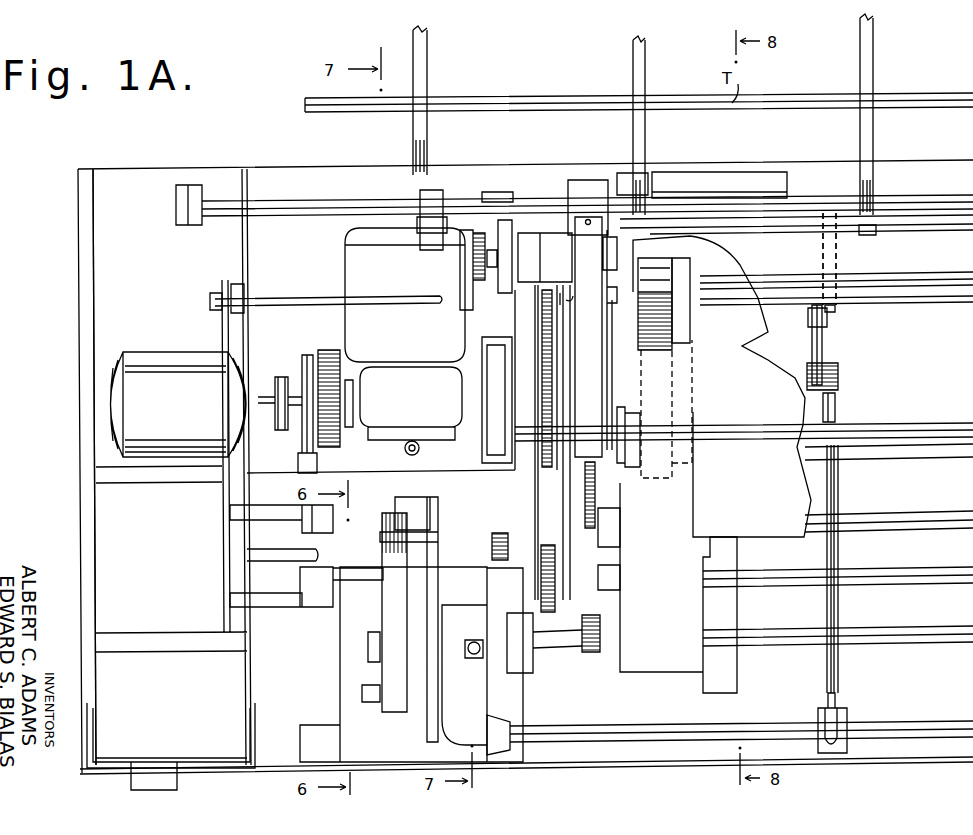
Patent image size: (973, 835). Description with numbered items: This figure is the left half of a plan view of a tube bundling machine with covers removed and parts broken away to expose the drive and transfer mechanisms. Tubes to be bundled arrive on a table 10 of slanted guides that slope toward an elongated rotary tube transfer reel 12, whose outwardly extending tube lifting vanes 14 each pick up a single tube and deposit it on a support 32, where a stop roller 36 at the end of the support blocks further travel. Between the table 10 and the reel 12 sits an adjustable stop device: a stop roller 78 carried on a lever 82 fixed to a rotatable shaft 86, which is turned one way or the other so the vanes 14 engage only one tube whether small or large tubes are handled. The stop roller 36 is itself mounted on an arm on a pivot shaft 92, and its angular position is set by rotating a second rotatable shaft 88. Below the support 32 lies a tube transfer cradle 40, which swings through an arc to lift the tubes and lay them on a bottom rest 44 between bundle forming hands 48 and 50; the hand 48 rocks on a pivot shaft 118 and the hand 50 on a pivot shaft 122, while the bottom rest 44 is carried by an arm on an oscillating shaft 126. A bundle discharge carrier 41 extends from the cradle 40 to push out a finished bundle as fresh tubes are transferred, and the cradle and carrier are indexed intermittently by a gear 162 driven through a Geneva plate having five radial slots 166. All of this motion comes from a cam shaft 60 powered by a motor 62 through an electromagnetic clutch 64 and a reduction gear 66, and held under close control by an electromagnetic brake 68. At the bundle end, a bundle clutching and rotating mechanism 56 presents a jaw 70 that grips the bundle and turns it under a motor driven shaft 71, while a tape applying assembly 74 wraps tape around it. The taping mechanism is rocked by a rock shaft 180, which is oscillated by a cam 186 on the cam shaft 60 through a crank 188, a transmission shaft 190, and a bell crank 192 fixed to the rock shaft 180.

The table 10 is at (640, 70).
The rotary tube transfer reel 12 is at (903, 277).
The tube lifting vanes 14 is at (942, 277).
The support 32 is at (605, 404).
The stop roller 36 is at (632, 463).
The tube transfer cradle 40 is at (553, 463).
The bundle discharge carrier 41 is at (556, 537).
The bottom rest 44 is at (505, 542).
The bundle forming hand 48 is at (597, 527).
The bundle forming hand 50 is at (620, 580).
The bundle clutching and rotating mechanism 56 is at (162, 556).
The cam shaft 60 is at (625, 262).
The motor 62 is at (148, 352).
The electromagnetic clutch 64 is at (327, 350).
The reduction gear 66 is at (448, 327).
The electromagnetic brake 68 is at (500, 390).
The jaw 70 is at (708, 273).
The motor driven shaft 71 is at (283, 556).
The tape applying assembly 74 is at (450, 517).
The stop roller 78 is at (430, 245).
The lever 82 is at (445, 228).
The rotatable shaft 86 is at (892, 201).
The rotatable shaft 88 is at (305, 298).
The pivot shaft 92 is at (935, 425).
The pivot shaft 118 is at (885, 520).
The pivot shaft 122 is at (893, 578).
The oscillating shaft 126 is at (895, 634).
The gear 162 is at (665, 355).
The radial slots 166 is at (690, 332).
The rock shaft 180 is at (890, 726).
The cam 186 is at (838, 250).
The crank 188 is at (825, 347).
The transmission shaft 190 is at (840, 482).
The bell crank 192 is at (818, 712).